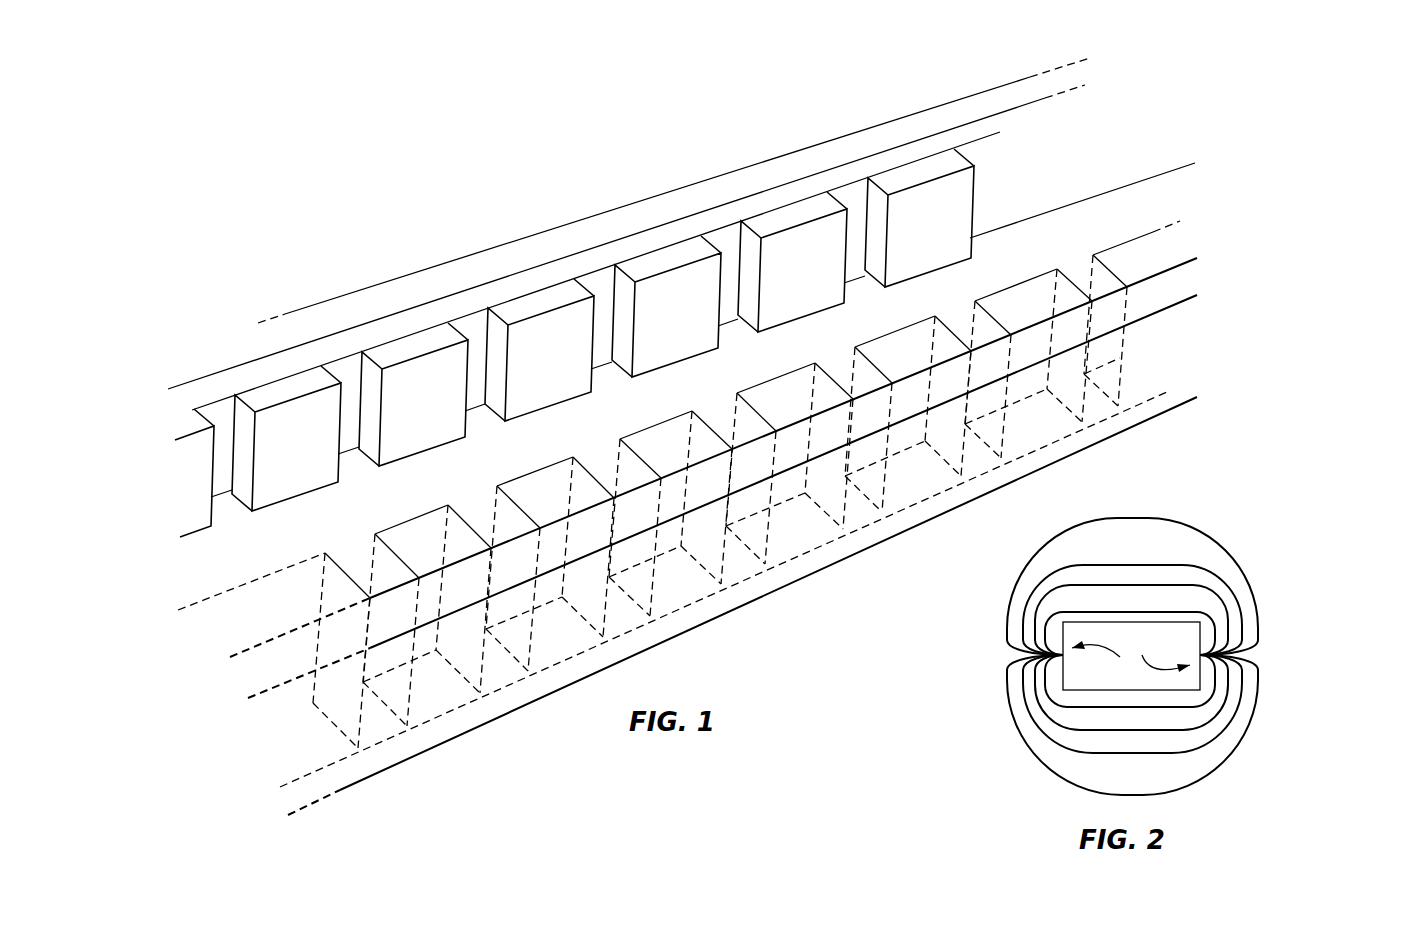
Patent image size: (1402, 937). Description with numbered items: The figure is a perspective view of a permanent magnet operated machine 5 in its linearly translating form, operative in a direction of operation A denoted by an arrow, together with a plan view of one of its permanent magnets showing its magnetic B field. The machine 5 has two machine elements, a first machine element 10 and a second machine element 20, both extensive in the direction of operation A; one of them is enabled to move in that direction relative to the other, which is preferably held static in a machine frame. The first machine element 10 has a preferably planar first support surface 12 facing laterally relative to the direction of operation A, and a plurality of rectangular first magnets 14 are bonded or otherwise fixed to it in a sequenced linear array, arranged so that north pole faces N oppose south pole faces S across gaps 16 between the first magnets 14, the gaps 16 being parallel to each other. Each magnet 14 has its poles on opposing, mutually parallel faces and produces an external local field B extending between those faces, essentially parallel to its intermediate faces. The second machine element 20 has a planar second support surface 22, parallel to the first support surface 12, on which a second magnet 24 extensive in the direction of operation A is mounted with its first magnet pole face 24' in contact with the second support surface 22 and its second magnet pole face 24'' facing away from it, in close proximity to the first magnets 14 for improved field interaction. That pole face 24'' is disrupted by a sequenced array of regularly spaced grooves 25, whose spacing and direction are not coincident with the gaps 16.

In FIG. 1, the permanent magnet operated machine 5 is at (935, 85).
In FIG. 1, the first machine element 10 is at (1131, 428).
In FIG. 1, the first support surface 12 is at (1155, 272).
In FIG. 1, the first magnets 14 is at (420, 532).
In FIG. 2, the first magnets 14 is at (1138, 622).
In FIG. 1, the gaps 16 is at (350, 557).
In FIG. 1, the second machine element 20 is at (657, 213).
In FIG. 1, the second support surface 22 is at (1027, 199).
In FIG. 1, the second magnet 24 is at (235, 339).
In FIG. 1, the first magnet pole face 24' is at (188, 416).
In FIG. 1, the second magnet pole face 24'' is at (603, 330).
In FIG. 1, the grooves 25 is at (347, 385).
In FIG. 1, the direction of operation A is at (815, 610).
In FIG. 2, the magnetic field B is at (1262, 652).